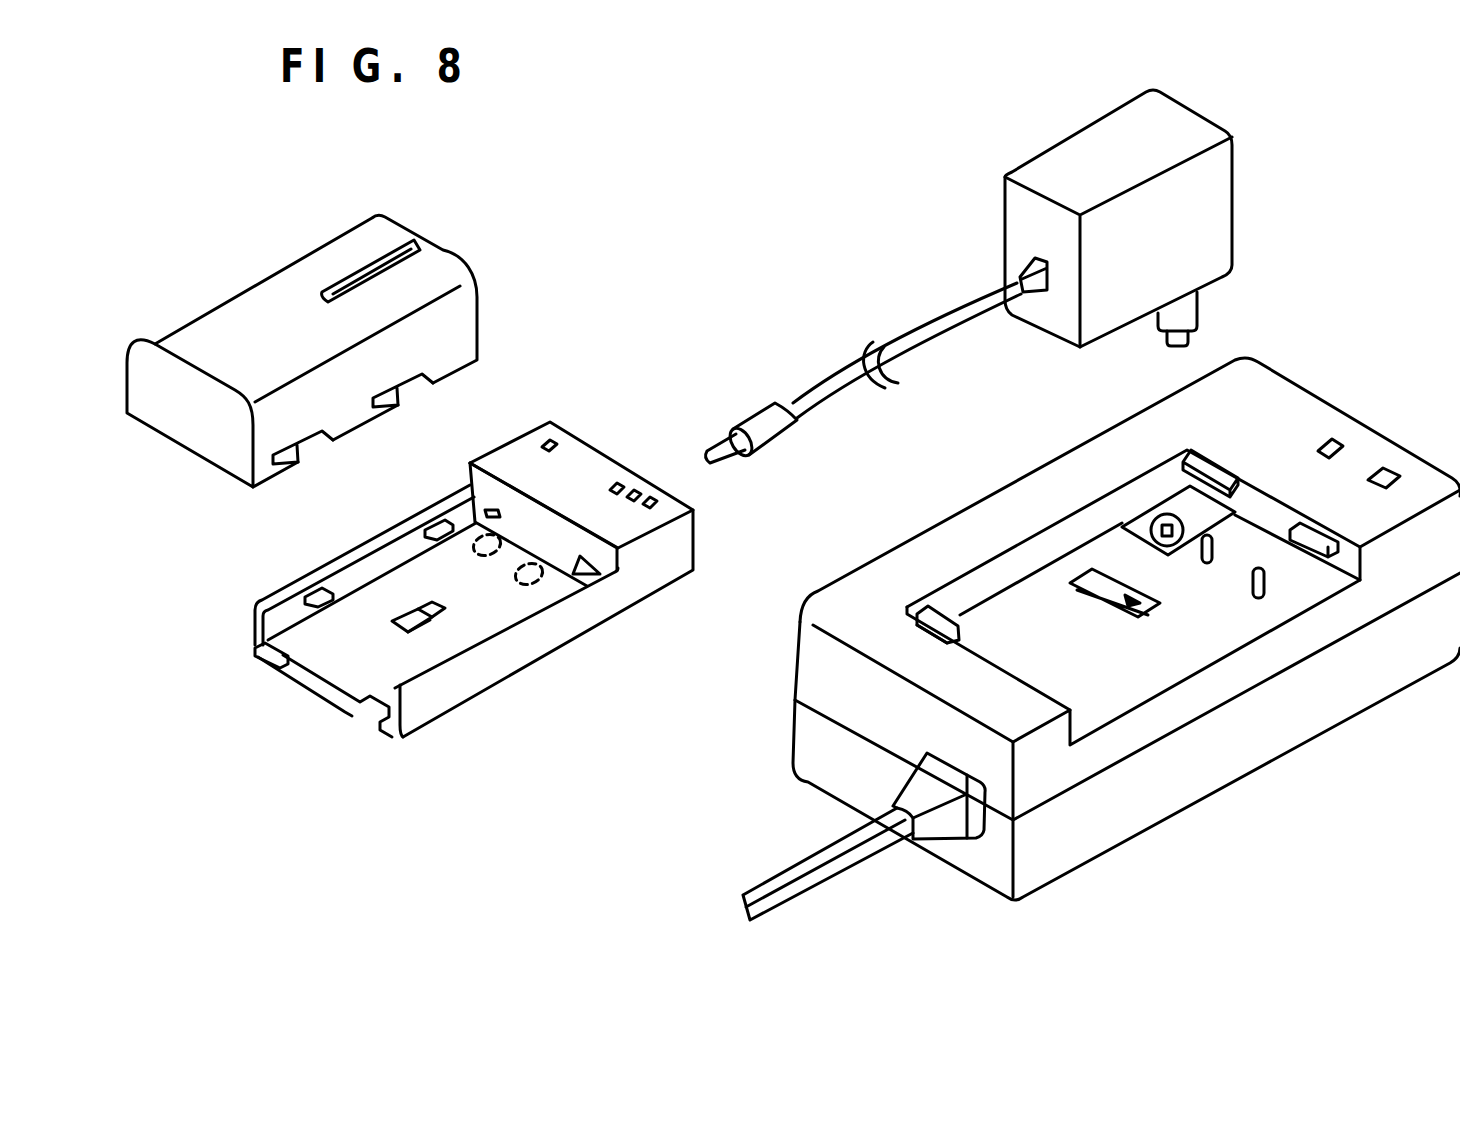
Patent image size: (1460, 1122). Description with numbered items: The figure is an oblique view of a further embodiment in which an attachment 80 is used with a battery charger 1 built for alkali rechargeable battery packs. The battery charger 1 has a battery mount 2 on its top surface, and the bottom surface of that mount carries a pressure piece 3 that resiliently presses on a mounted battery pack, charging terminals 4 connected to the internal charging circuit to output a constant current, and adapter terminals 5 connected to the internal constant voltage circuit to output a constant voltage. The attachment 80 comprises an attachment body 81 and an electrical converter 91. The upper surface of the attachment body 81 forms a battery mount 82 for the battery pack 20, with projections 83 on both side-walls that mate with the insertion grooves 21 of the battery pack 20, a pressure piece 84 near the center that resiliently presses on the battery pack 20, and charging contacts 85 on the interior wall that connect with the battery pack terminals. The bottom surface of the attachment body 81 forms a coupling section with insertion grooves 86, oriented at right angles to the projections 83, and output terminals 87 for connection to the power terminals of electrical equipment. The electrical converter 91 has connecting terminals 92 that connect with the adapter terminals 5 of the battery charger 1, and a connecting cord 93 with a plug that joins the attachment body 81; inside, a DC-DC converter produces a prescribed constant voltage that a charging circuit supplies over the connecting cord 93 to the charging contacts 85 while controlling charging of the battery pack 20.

The battery charger 1 is at (1228, 792).
The battery mount 2 is at (963, 591).
The pressure piece 3 is at (990, 620).
The charging terminals 4 is at (1262, 583).
The adapter terminals 5 is at (1151, 522).
The battery pack 20 is at (530, 211).
The insertion grooves 21 is at (418, 398).
The attachment 80 is at (732, 290).
The attachment body 81 is at (585, 440).
The battery mount 82 is at (325, 668).
The projections 83 is at (303, 594).
The pressure piece 84 is at (402, 620).
The charging contacts 85 is at (500, 513).
The insertion grooves 86 is at (362, 717).
The output terminals 87 is at (483, 556).
The electrical converter 91 is at (1068, 148).
The connecting terminals 92 is at (1190, 324).
The connecting cord 93 is at (903, 335).